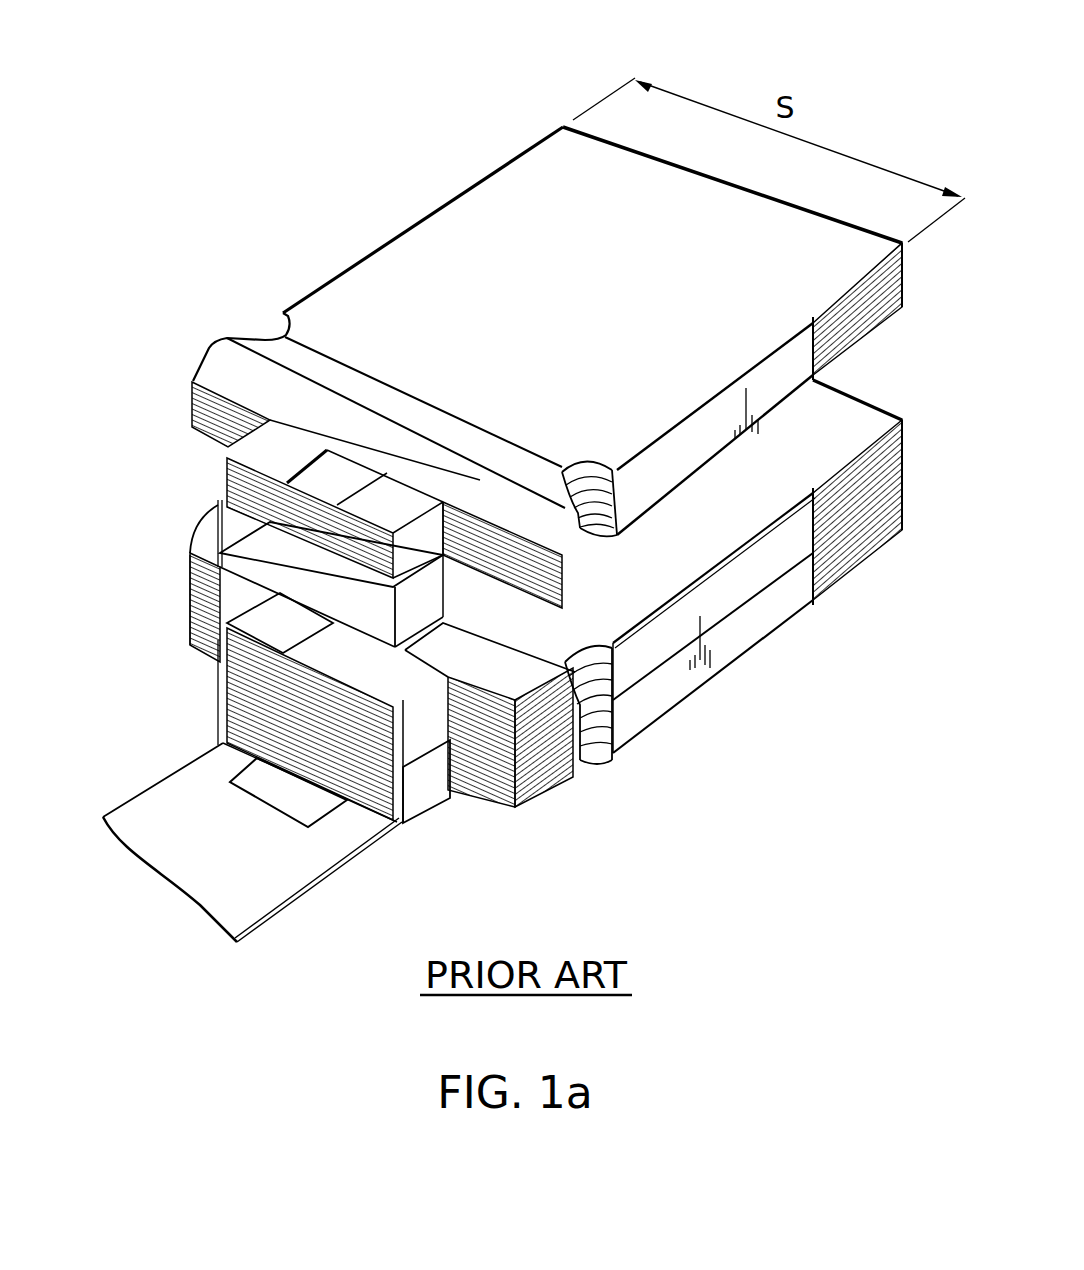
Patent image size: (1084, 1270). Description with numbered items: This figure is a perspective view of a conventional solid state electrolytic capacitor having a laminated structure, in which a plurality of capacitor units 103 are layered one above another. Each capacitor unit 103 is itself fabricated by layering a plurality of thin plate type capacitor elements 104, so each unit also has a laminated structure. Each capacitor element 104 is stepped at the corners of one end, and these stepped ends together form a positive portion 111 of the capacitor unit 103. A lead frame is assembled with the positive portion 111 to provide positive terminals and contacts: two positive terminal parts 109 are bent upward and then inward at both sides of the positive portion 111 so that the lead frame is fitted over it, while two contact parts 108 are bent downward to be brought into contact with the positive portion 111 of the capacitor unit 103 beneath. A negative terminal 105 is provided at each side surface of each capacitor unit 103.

The capacitor unit 103 is at (538, 185).
The capacitor element 104 is at (300, 515).
The negative terminal 105 is at (745, 637).
The contact part 108 is at (432, 595).
The positive terminal part 109 is at (250, 453).
The positive portion 111 is at (205, 519).